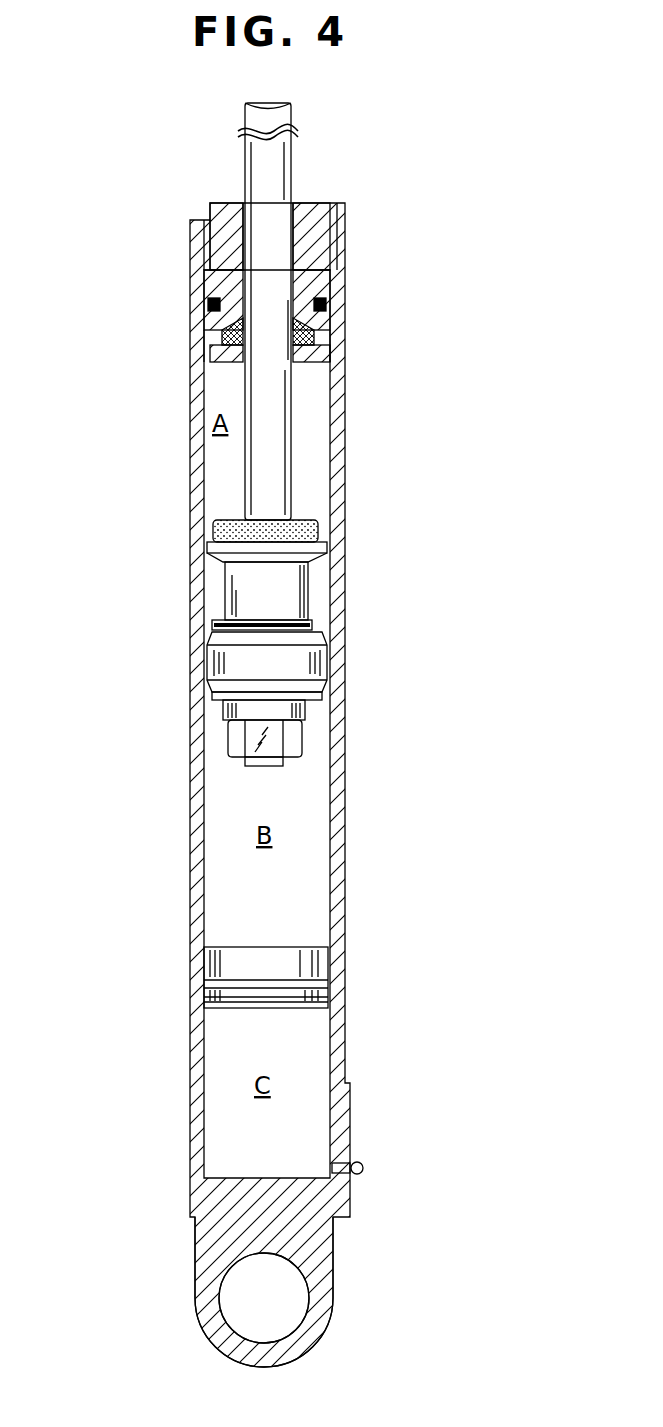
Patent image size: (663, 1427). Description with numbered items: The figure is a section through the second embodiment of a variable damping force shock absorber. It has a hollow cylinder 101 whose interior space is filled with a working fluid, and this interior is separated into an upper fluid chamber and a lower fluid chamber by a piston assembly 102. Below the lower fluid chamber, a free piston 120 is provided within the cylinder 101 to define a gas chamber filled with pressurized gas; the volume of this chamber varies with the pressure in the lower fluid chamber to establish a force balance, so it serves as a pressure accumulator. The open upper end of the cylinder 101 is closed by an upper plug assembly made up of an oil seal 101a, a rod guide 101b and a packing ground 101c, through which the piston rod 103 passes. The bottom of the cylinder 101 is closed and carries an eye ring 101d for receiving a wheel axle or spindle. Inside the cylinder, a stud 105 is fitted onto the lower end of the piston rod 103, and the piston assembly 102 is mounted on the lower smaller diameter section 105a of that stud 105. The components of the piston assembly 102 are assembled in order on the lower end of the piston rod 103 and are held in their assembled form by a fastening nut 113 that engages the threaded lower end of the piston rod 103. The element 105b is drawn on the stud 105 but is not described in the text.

The hollow cylinder 101 is at (198, 862).
The oil seal 101a is at (208, 336).
The rod guide 101b is at (216, 290).
The packing ground 101c is at (207, 207).
The eye ring 101d is at (206, 1268).
The piston assembly 102 is at (331, 672).
The piston rod 103 is at (291, 410).
The stud 105 is at (320, 575).
The lower smaller diameter section 105a is at (284, 762).
The valve disc 105b is at (300, 607).
The fastening nut 113 is at (291, 740).
The free piston 120 is at (326, 972).